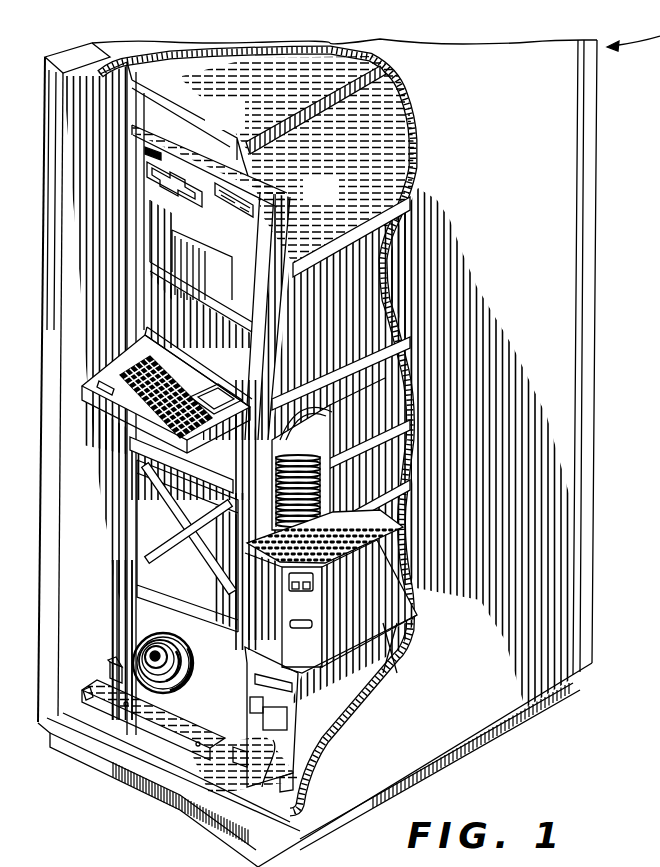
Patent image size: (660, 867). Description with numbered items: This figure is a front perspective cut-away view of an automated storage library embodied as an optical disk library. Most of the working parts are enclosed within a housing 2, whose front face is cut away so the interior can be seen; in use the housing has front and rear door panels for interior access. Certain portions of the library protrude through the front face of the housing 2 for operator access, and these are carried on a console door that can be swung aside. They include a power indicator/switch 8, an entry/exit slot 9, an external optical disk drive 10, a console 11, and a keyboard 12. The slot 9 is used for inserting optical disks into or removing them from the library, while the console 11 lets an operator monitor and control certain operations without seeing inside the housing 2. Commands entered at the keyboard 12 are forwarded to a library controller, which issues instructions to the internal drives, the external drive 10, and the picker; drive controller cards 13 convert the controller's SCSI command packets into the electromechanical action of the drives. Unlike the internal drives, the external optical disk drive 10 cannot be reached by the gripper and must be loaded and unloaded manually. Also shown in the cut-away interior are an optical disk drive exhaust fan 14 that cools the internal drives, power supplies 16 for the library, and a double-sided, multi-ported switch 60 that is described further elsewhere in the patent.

The housing 2 is at (597, 118).
The power indicator/switch 8 is at (147, 158).
The entry/exit slot 9 is at (170, 187).
The external optical disk drive 10 is at (292, 210).
The console 11 is at (243, 297).
The keyboard 12 is at (205, 372).
The drive controller cards 13 is at (327, 486).
The optical disk drive exhaust fan 14 is at (143, 643).
The power supplies 16 is at (383, 658).
The double-sided, multi-ported switch 60 is at (397, 438).